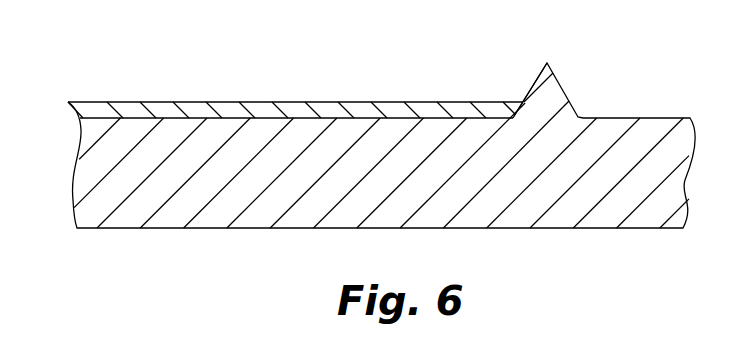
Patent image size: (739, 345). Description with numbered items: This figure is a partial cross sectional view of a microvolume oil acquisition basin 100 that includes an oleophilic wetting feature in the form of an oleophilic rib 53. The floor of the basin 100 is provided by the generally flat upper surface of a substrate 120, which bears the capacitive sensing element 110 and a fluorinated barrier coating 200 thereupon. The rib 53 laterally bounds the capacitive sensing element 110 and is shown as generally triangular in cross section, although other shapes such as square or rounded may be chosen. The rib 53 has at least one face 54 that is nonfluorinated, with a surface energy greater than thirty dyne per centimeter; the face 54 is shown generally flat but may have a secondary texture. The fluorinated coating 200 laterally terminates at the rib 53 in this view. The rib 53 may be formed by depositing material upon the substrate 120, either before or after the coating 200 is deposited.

The capacitive sensing element 110 is at (27, 112).
The substrate 120 is at (257, 217).
The microvolume oil acquisition basin 100 is at (290, 100).
The fluorinated barrier coating 200 is at (163, 107).
The oleophilic rib 53 is at (557, 92).
The face 54 is at (533, 90).